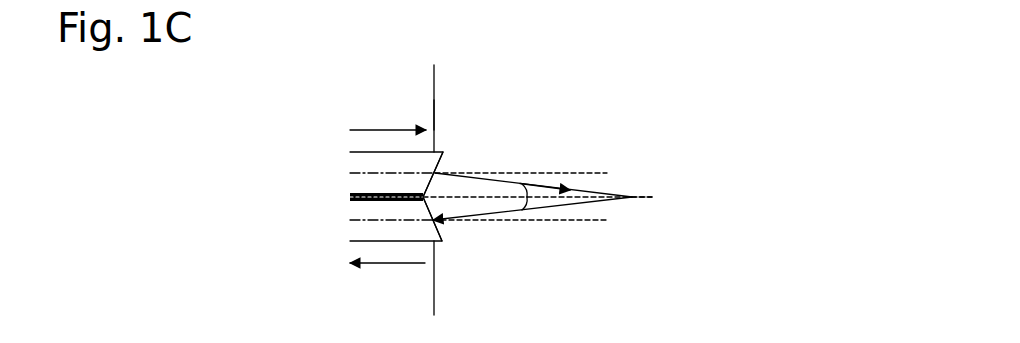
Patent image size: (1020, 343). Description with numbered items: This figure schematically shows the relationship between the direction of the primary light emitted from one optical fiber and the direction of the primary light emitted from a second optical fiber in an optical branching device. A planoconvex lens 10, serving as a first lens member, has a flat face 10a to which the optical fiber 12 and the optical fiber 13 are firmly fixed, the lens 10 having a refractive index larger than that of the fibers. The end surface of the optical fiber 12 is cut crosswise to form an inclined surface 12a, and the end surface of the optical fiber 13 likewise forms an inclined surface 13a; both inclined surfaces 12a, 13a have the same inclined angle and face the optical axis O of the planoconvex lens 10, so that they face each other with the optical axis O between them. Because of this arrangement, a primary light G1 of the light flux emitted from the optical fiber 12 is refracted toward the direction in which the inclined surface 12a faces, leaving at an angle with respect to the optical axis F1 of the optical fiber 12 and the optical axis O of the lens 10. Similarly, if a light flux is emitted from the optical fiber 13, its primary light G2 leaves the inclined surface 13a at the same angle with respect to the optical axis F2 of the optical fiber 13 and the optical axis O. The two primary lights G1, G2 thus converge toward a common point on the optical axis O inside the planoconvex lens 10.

The planoconvex lens 10 is at (418, 297).
The fiber end face 10a is at (436, 113).
The optical fiber 12 is at (352, 162).
The inclined surface 12a is at (451, 160).
The optical fiber 13 is at (352, 230).
The inclined surface 13a is at (447, 234).
The primary light G1 is at (513, 182).
The primary light G2 is at (506, 210).
The optical axis F1 is at (593, 173).
The optical axis F2 is at (583, 221).
The optical axis O is at (650, 197).